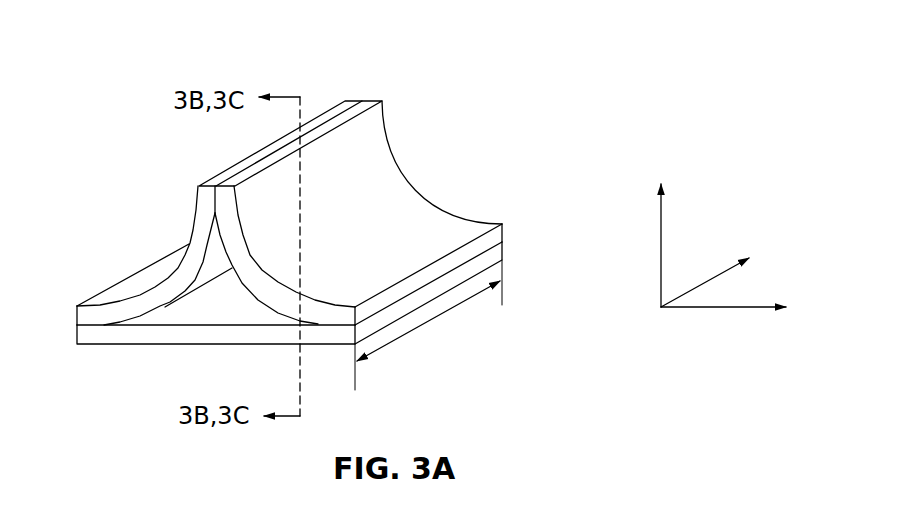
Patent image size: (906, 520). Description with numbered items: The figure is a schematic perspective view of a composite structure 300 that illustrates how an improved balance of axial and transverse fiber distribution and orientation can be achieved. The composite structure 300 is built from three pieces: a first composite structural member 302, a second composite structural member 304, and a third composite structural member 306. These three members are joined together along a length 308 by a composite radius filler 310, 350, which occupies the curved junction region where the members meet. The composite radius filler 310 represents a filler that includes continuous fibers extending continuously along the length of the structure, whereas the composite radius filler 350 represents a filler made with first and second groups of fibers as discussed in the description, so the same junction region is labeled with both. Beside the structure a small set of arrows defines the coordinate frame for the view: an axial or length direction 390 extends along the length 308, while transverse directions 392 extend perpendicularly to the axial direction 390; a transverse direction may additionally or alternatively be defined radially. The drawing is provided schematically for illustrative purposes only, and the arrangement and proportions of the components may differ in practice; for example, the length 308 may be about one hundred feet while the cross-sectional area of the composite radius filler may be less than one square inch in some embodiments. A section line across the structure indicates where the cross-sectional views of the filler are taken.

The composite structure 300 is at (199, 42).
The first composite structural member 302 is at (387, 188).
The second composite structural member 304 is at (192, 228).
The third composite structural member 306 is at (107, 345).
The length 308 is at (425, 325).
The composite radius filler 310 is at (190, 313).
The composite radius filler 350 is at (289, 331).
The axial direction 390 is at (717, 273).
The transverse directions 392 is at (660, 243).